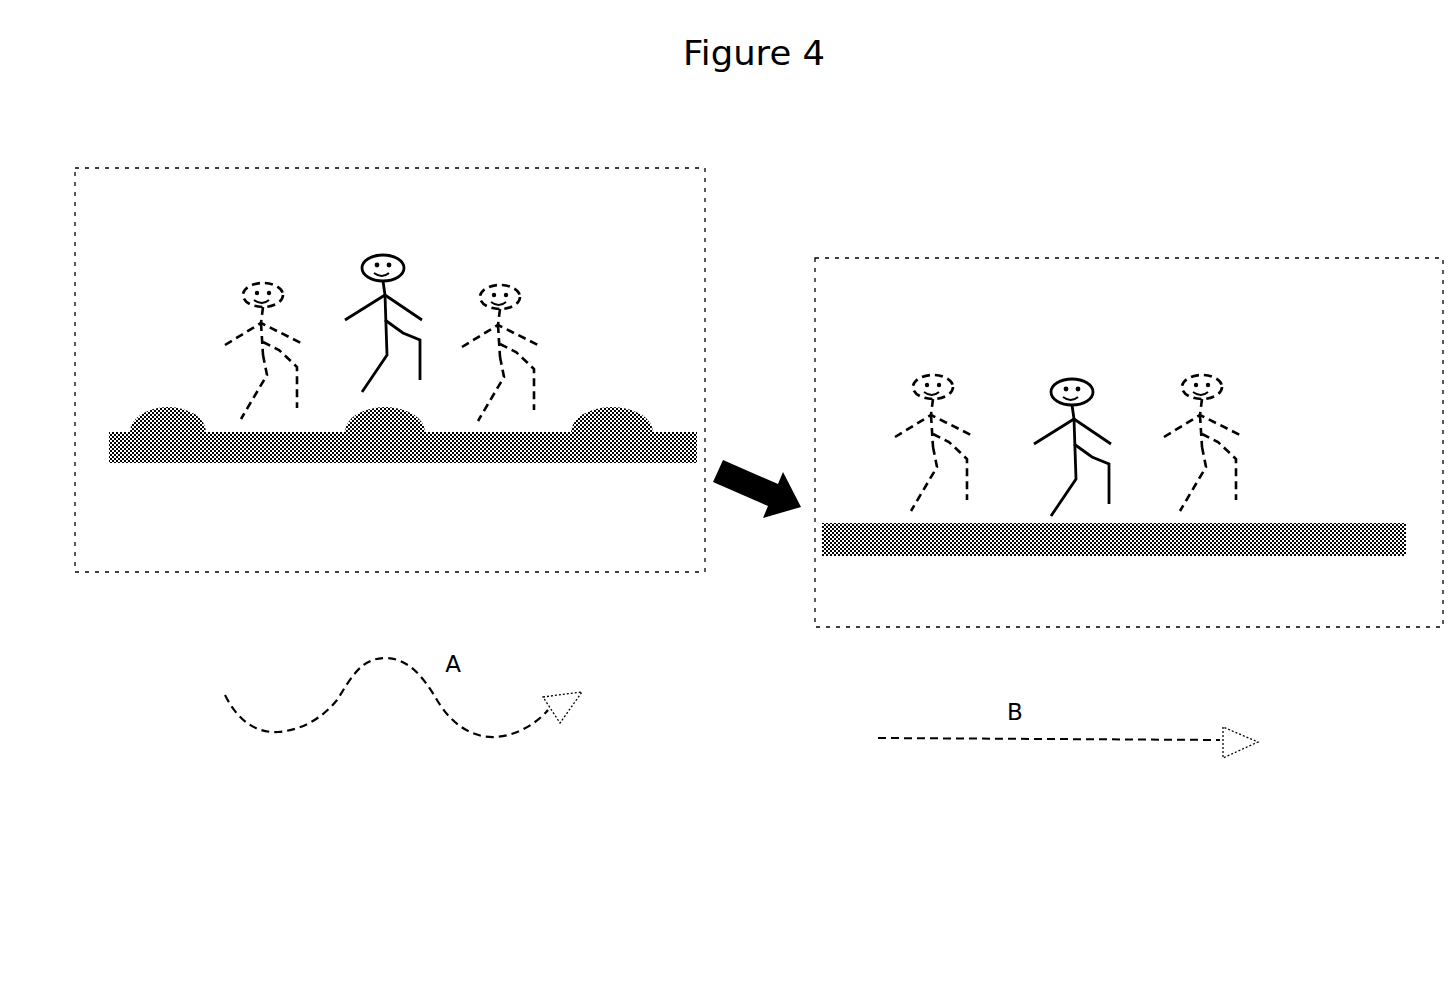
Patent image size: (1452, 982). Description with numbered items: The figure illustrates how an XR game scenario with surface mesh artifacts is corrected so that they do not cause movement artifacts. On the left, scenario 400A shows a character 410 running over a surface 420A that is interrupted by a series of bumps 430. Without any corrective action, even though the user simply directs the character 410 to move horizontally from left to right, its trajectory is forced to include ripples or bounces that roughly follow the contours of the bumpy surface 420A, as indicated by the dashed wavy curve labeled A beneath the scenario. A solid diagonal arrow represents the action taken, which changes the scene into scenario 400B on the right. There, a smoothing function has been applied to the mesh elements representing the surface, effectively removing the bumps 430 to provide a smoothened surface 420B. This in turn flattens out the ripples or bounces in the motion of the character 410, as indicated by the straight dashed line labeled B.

The scenario 400A is at (320, 175).
The scenario 400B is at (1053, 258).
The character 410 is at (383, 265).
The surface 420A is at (300, 432).
The smoothened surface 420B is at (1300, 523).
The bumps 430 is at (604, 420).